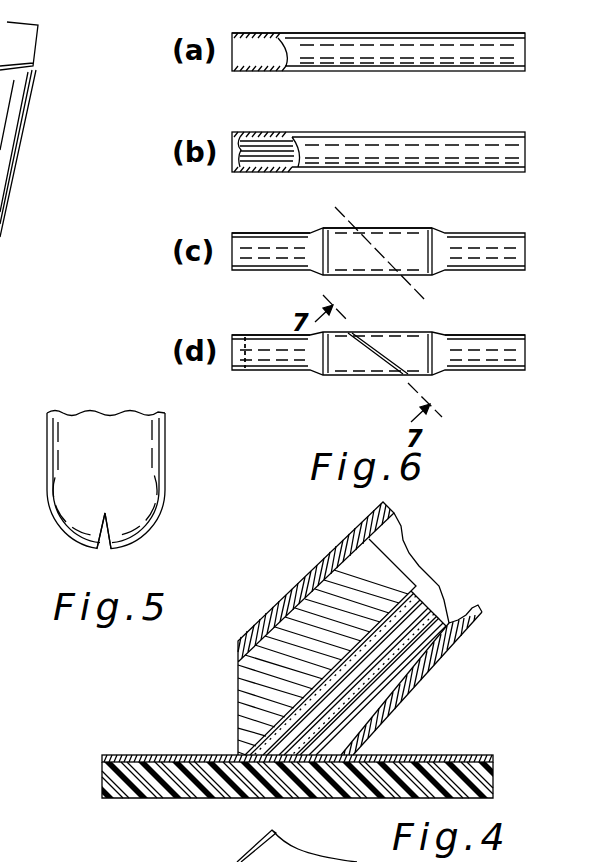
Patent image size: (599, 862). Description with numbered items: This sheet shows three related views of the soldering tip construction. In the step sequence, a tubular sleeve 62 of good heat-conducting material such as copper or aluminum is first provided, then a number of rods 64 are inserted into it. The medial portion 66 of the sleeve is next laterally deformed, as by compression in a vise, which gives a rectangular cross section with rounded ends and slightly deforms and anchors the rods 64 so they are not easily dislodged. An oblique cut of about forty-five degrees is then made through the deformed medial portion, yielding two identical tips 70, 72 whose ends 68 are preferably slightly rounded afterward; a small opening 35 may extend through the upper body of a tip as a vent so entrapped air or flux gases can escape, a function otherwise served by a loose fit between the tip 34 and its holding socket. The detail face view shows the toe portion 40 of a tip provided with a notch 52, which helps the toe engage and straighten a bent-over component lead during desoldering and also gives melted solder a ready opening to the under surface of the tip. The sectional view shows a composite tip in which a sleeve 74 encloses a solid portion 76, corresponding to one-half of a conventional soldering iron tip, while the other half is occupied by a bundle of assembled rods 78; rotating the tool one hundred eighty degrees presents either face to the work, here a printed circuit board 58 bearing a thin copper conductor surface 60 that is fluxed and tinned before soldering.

In FIG. 6, the tubular sleeve 62 is at (408, 60).
In FIG. 6, the rods 64 is at (265, 139).
In FIG. 6, the medial portion of the sleeve 66 is at (392, 228).
In FIG. 6, the ends 68 is at (359, 341).
In FIG. 6, the tip 70 is at (255, 337).
In FIG. 6, the tip 72 is at (494, 337).
In FIG. 6, the small opening 35 is at (245, 372).
In FIG. 5, the toe portion 40 is at (126, 531).
In FIG. 5, the notch 52 is at (108, 550).
In FIG. 4, the sleeve 74 is at (291, 590).
In FIG. 4, the solid portion 76 is at (237, 687).
In FIG. 4, the bundle of assembled rods 78 is at (391, 689).
In FIG. 4, the copper conductor surface 60 is at (468, 755).
In FIG. 4, the printed circuit board 58 is at (493, 783).
In FIG. 4, the tip 34 is at (268, 846).